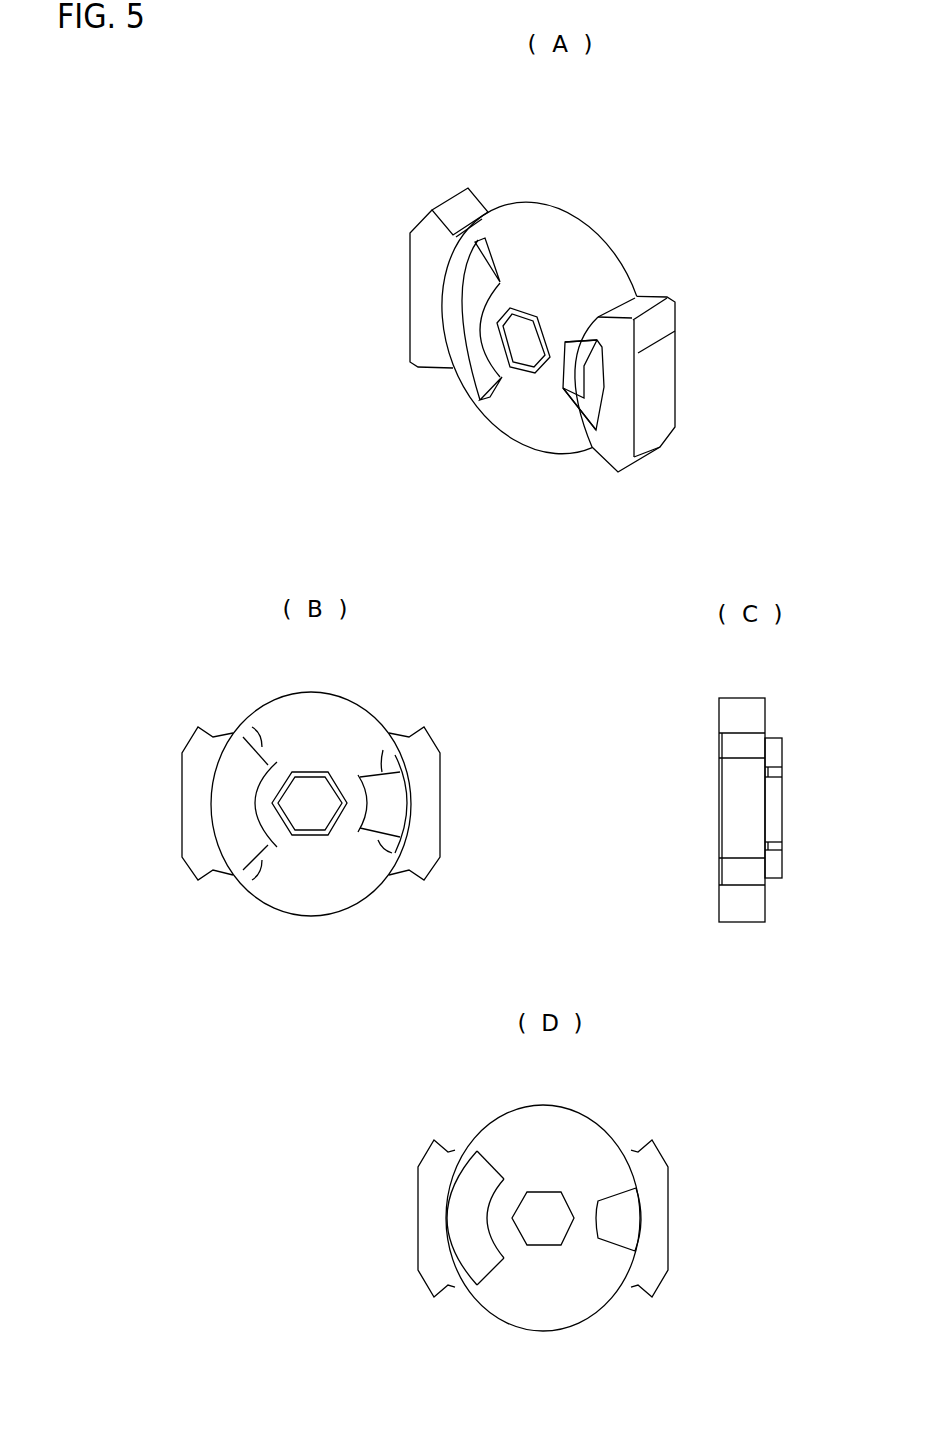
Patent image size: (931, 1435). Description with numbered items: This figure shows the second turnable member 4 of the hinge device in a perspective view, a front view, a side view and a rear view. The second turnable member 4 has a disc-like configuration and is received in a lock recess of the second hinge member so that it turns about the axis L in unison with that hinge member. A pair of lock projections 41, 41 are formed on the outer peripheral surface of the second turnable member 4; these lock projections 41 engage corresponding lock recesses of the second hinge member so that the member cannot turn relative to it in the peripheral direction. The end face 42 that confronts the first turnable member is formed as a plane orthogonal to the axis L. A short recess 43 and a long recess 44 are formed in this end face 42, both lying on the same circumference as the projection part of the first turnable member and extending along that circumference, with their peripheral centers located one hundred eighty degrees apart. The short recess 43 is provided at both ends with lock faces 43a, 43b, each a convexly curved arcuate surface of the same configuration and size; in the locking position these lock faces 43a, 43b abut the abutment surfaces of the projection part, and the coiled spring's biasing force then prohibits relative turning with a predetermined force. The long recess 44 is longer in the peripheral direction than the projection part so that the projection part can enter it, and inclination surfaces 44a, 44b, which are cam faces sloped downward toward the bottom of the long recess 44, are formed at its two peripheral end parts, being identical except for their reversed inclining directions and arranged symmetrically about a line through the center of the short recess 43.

The second turnable member 4 is at (575, 215).
The lock projection 41 is at (411, 250).
The end face 42 is at (525, 414).
The short recess 43 is at (601, 361).
The lock face 43a is at (584, 400).
The lock face 43b is at (573, 346).
The long recess 44 is at (471, 304).
The inclination surface 44a is at (480, 402).
The inclination surface 44b is at (483, 218).